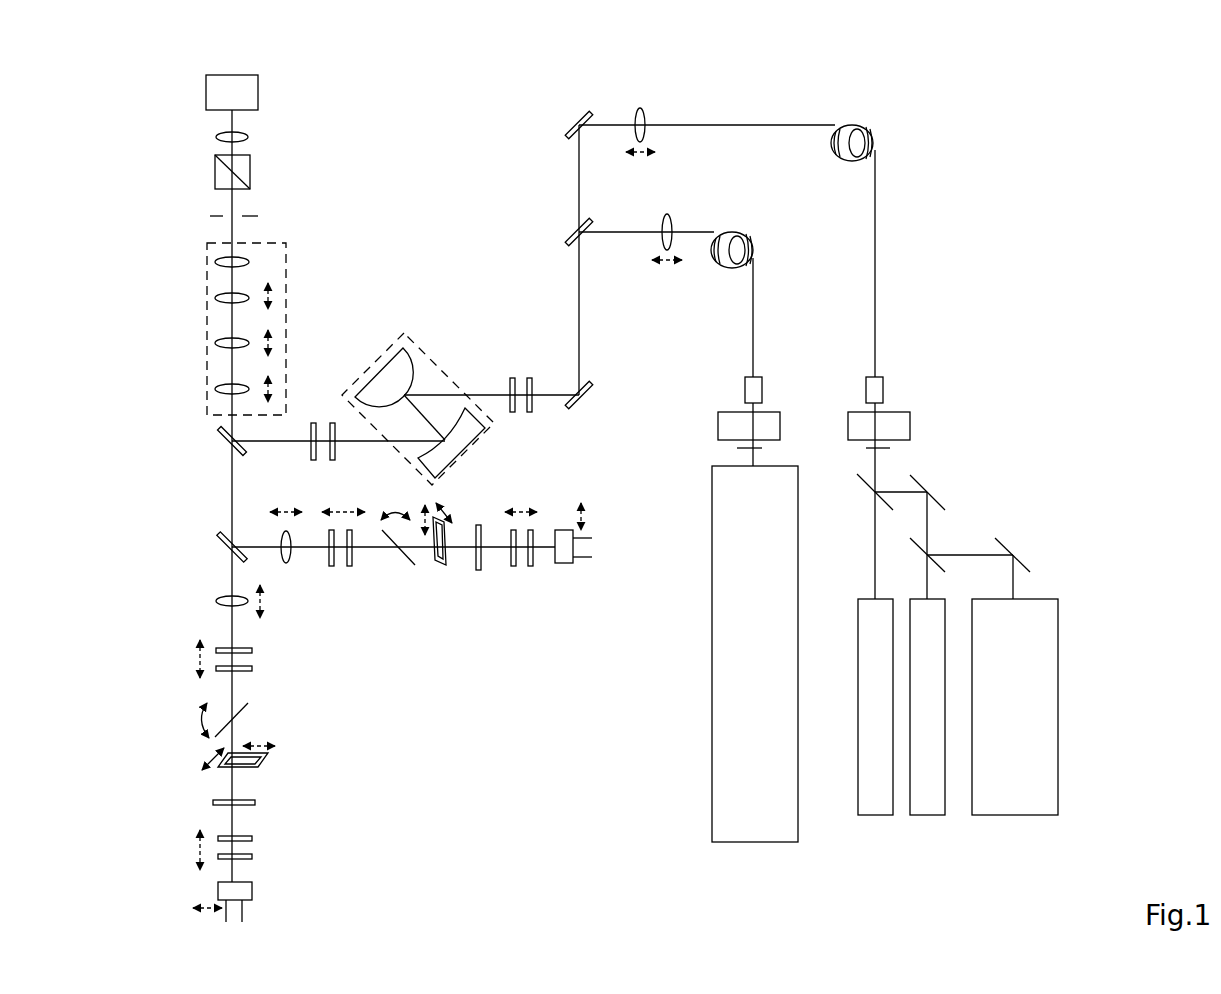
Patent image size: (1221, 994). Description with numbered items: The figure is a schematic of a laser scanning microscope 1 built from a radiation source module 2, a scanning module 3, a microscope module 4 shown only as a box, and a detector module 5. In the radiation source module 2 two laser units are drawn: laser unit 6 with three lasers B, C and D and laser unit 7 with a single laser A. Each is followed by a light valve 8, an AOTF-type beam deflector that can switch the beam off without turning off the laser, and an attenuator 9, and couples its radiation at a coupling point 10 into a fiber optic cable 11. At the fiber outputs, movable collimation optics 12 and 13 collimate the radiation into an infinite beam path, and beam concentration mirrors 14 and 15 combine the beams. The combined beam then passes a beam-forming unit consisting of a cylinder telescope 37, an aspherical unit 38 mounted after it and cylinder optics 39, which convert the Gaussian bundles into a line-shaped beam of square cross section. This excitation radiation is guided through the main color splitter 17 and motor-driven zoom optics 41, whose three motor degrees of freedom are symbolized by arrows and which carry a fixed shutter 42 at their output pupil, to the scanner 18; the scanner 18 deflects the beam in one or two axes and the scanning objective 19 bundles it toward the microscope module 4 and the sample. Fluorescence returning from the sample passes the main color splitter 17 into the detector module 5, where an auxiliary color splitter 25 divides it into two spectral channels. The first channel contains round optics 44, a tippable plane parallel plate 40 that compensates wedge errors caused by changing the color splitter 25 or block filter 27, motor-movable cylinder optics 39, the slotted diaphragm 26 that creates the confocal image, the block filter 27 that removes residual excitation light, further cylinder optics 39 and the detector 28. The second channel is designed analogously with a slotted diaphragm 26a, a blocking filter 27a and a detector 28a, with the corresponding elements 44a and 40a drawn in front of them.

The laser scanning microscope 1 is at (512, 862).
The radiation source module 2 is at (694, 868).
The scanning module 3 is at (178, 72).
The microscope module 4 is at (208, 96).
The detector module 5 is at (150, 540).
The laser unit 6 is at (1023, 833).
The laser unit 7 is at (713, 788).
The light valve 8 is at (890, 448).
The attenuator 9 is at (903, 425).
The coupling point 10 is at (880, 392).
The fiber optic cable 11 is at (876, 318).
The collimation optics 12 is at (636, 115).
The collimation optics 13 is at (670, 222).
The beam concentration mirror 14 is at (573, 124).
The beam concentration mirror 15 is at (575, 232).
The main color splitter 17 is at (222, 438).
The scanner 18 is at (215, 178).
The scanning objective 19 is at (218, 136).
The auxiliary color splitter 25 is at (225, 533).
The slotted diaphragm 26 is at (432, 567).
The slotted diaphragm 26a is at (262, 760).
The block filter 27 is at (477, 572).
The blocking filter 27a is at (255, 803).
The detector 28 is at (566, 565).
The detector 28a is at (245, 897).
The cylinder telescope 37 is at (540, 371).
The aspherical unit 38 is at (473, 450).
The cylinder optics 39 is at (341, 468).
The plane parallel plate 40 is at (405, 560).
The deflection mirror 40a is at (247, 702).
The zoom optics 41 is at (207, 311).
The shutter 42 is at (210, 216).
The round optics 44 is at (285, 563).
The lens 44a is at (214, 603).